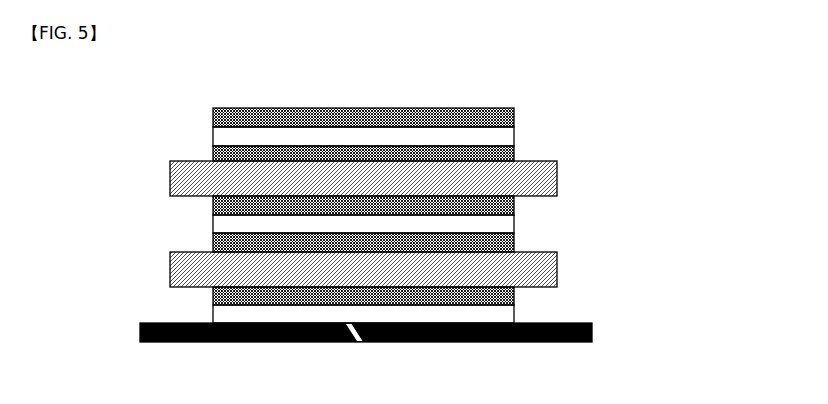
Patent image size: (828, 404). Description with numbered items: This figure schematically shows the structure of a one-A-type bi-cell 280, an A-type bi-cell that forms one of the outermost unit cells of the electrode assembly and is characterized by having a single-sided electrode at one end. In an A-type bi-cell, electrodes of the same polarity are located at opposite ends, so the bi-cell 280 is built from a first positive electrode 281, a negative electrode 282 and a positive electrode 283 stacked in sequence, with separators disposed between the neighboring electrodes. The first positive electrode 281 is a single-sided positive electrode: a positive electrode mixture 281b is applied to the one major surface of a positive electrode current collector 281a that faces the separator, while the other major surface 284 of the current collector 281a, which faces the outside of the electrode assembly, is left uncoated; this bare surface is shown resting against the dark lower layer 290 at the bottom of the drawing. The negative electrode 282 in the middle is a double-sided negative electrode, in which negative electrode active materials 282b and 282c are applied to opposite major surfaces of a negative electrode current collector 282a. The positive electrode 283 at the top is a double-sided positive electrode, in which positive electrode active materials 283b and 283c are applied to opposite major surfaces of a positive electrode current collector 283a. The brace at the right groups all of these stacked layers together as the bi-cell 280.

The 1A-type bi-cell 280 is at (678, 88).
The first positive electrode 281 is at (271, 308).
The positive electrode current collector 281a is at (213, 320).
The positive electrode mixture 281b is at (213, 297).
The negative electrode 282 is at (271, 226).
The negative electrode current collector 282a is at (213, 230).
The negative electrode active material 282b is at (213, 199).
The negative electrode active material 282c is at (213, 247).
The positive electrode 283 is at (271, 124).
The positive electrode current collector 283a is at (213, 135).
The positive electrode active material 283b is at (213, 110).
The positive electrode active material 283c is at (213, 153).
The other major surface 284 is at (356, 342).
The substrate / lower electrode 290 is at (593, 332).